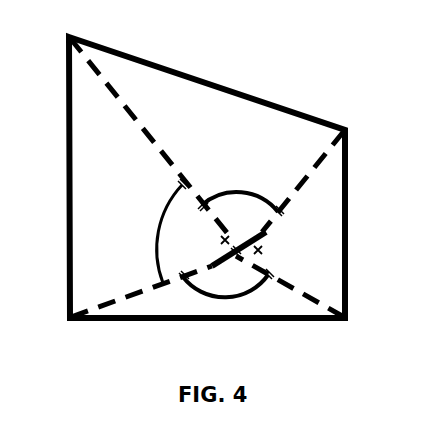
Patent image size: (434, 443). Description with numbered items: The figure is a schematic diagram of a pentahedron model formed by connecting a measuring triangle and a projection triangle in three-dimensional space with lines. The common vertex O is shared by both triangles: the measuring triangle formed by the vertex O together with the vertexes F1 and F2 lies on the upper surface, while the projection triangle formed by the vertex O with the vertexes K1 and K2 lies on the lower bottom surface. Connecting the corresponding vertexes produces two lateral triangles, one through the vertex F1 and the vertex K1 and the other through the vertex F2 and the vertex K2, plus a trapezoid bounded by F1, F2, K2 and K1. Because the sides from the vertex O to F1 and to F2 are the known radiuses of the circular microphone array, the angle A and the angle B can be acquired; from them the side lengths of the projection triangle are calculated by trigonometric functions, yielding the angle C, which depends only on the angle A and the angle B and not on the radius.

The vertex F1 of the measuring triangle F1 is at (136, 123).
The vertex F2 of the measuring triangle F2 is at (316, 171).
The vertex K1 of the projection triangle K1 is at (125, 307).
The vertex K2 of the projection triangle K2 is at (300, 302).
The angle A is at (240, 187).
The angle B is at (151, 234).
The angle C is at (228, 295).
The vertex O is at (231, 244).